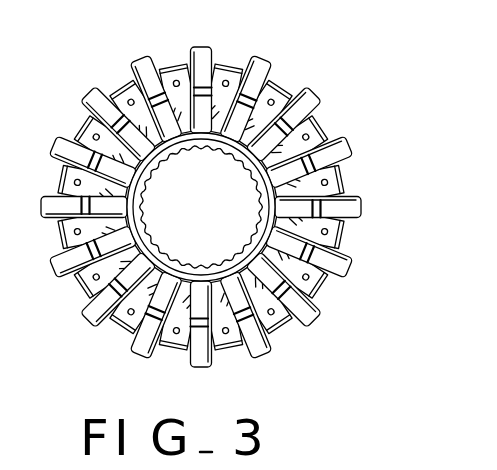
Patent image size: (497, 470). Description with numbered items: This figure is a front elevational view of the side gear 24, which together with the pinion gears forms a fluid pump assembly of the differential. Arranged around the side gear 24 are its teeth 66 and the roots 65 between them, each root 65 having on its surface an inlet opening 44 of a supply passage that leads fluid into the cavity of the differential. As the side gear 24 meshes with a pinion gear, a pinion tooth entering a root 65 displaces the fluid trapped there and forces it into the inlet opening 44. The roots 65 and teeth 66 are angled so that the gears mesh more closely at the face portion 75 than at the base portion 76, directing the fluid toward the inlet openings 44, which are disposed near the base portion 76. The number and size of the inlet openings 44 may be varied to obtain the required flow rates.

The side gear 24 is at (228, 190).
The spacer rib 66 is at (321, 86).
The root 65 is at (331, 118).
The inlet opening 44 is at (330, 182).
The base portion 76 is at (336, 240).
The face portion 75 is at (323, 293).